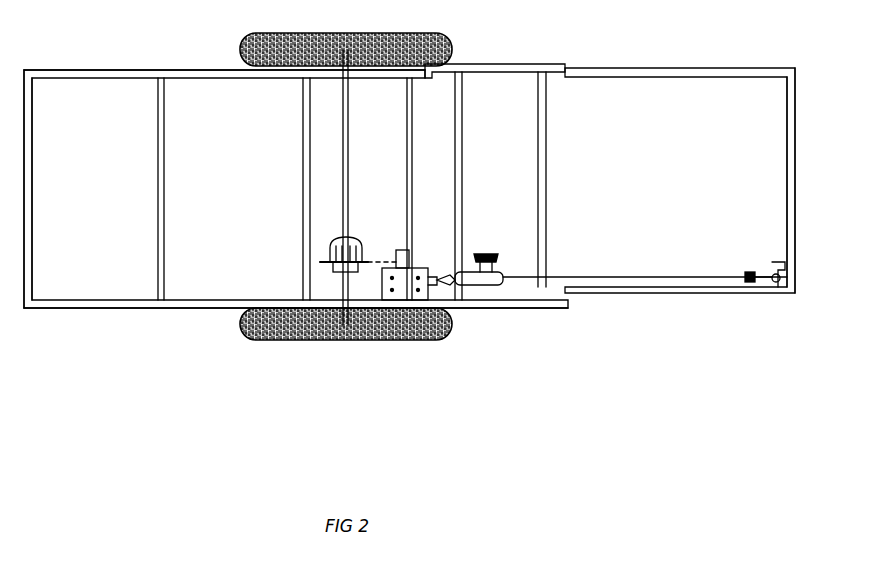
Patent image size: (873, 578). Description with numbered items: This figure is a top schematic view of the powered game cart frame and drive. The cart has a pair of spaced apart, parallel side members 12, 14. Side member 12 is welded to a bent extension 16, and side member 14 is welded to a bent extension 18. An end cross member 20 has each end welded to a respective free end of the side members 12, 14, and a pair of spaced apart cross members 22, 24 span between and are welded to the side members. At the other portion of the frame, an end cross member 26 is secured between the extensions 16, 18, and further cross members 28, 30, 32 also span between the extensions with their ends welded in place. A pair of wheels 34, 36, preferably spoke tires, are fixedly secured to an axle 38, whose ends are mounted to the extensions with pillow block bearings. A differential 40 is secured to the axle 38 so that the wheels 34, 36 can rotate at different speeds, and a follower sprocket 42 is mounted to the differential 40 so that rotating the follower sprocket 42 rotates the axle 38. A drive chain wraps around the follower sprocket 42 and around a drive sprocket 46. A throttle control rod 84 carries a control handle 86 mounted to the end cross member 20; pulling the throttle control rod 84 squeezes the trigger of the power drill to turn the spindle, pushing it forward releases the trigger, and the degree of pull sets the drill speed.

The side member 12 is at (635, 73).
The side member 14 is at (650, 290).
The bent extension 16 is at (92, 73).
The bent extension 18 is at (80, 300).
The end cross member 20 is at (793, 191).
The cross member 22 is at (545, 151).
The cross member 24 is at (460, 154).
The end cross member 26 is at (33, 166).
The cross member 28 is at (161, 166).
The cross member 30 is at (300, 166).
The cross member 32 is at (409, 142).
The wheel 34 is at (452, 48).
The wheel 36 is at (290, 341).
The axle 38 is at (350, 196).
The differential 40 is at (360, 245).
The follower sprocket 42 is at (325, 258).
The drive sprocket 46 is at (398, 258).
The throttle control rod 84 is at (575, 272).
The control handle 86 is at (790, 262).